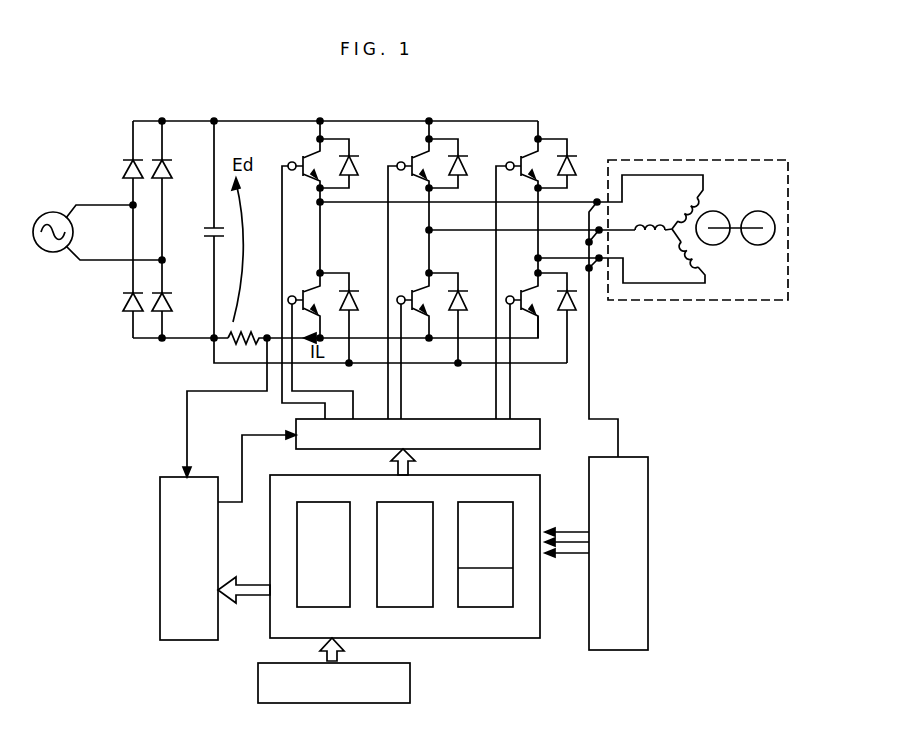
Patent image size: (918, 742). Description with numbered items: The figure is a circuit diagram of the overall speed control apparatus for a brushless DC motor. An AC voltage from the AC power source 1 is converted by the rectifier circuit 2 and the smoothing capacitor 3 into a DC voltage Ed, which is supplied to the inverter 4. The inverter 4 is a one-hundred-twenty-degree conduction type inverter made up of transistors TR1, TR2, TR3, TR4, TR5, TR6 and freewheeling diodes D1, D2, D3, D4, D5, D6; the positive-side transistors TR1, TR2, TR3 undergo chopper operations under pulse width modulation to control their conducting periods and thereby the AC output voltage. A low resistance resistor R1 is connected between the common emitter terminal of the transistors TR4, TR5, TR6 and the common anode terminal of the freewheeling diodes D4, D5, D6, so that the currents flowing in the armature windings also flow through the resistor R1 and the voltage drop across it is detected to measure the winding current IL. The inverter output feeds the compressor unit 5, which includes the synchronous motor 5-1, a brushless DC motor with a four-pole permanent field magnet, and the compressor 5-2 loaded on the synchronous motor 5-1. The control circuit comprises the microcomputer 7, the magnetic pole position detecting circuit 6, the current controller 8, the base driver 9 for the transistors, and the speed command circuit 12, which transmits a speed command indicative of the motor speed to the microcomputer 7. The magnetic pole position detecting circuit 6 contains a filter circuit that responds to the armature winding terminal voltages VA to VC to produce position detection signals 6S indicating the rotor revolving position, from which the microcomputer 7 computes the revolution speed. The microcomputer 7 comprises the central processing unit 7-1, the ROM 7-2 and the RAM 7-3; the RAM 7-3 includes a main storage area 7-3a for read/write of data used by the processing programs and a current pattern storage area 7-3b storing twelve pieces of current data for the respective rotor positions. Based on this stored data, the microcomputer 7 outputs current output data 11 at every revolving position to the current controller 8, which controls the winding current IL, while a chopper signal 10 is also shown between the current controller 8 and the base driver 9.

The AC power source 1 is at (60, 186).
The rectifier circuit 2 is at (163, 105).
The smoothing capacitor 3 is at (202, 225).
The inverter 4 is at (438, 250).
The compressor unit 5 is at (693, 213).
The synchronous motor 5-1 is at (714, 247).
The compressor 5-2 is at (757, 211).
The magnetic pole position detecting circuit 6 is at (648, 499).
The position detection signals 6S is at (566, 556).
The microcomputer 7 is at (405, 579).
The central processing unit 7-1 is at (319, 500).
The ROM 7-2 is at (408, 500).
The RAM 7-3 is at (491, 556).
The main storage area 7-3a is at (485, 535).
The current pattern storage area 7-3b is at (485, 588).
The current controller 8 is at (188, 640).
The base driver 9 is at (535, 419).
The chopper signal 10 is at (258, 432).
The current output data 11 is at (248, 598).
The speed command circuit 12 is at (410, 688).
The transistor TR1 is at (300, 270).
The transistor TR2 is at (407, 270).
The transistor TR3 is at (516, 270).
The transistor TR4 is at (316, 303).
The transistor TR5 is at (408, 303).
The transistor TR6 is at (517, 303).
The freewheeling diode D1 is at (347, 157).
The freewheeling diode D2 is at (456, 157).
The freewheeling diode D3 is at (565, 157).
The freewheeling diode D4 is at (348, 316).
The freewheeling diode D5 is at (457, 316).
The freewheeling diode D6 is at (557, 318).
The low resistance resistor R1 is at (383, 328).